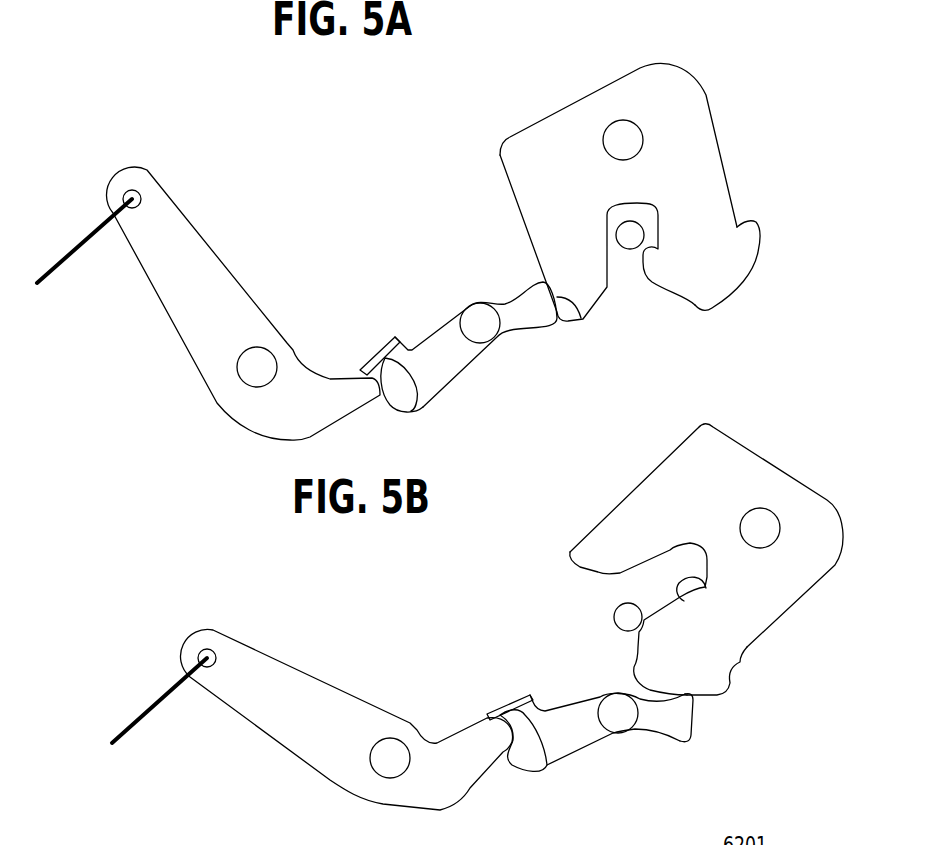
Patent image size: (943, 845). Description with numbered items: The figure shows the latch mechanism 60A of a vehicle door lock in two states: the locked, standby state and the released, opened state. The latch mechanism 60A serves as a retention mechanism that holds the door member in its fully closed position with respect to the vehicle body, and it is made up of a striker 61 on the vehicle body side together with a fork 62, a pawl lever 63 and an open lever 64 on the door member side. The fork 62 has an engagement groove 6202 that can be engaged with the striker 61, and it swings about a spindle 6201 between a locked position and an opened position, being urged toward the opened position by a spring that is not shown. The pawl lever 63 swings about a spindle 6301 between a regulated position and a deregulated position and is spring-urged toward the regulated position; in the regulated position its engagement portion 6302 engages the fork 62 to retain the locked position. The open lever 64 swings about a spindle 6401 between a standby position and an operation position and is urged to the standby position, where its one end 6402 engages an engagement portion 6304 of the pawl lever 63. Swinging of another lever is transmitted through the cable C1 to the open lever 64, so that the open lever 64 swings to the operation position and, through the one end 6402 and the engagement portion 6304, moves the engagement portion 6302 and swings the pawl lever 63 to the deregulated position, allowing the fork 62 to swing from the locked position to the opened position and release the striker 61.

In FIG. 5A, the latch mechanism 60A is at (288, 146).
In FIG. 5B, the latch mechanism 60A is at (360, 611).
In FIG. 5A, the cable C1 is at (70, 252).
In FIG. 5B, the cable C1 is at (145, 717).
In FIG. 5A, the striker 61 is at (613, 233).
In FIG. 5B, the striker 61 is at (614, 617).
In FIG. 5A, the fork 62 is at (593, 93).
In FIG. 5B, the fork 62 is at (823, 500).
In FIG. 5A, the spindle 6201 is at (600, 143).
In FIG. 5B, the spindle 6201 is at (743, 507).
In FIG. 5A, the engagement groove 6202 is at (690, 308).
In FIG. 5B, the engagement groove 6202 is at (730, 650).
In FIG. 5A, the pawl lever 63 is at (437, 330).
In FIG. 5B, the pawl lever 63 is at (567, 702).
In FIG. 5A, the spindle 6301 is at (510, 330).
In FIG. 5B, the spindle 6301 is at (623, 723).
In FIG. 5A, the engagement portion 6302 is at (583, 318).
In FIG. 5B, the engagement portion 6302 is at (693, 720).
In FIG. 5A, the engagement portion 6304 is at (423, 403).
In FIG. 5B, the engagement portion 6304 is at (533, 715).
In FIG. 5A, the open lever 64 is at (158, 302).
In FIG. 5B, the open lever 64 is at (273, 735).
In FIG. 5A, the spindle 6401 is at (243, 383).
In FIG. 5B, the spindle 6401 is at (373, 773).
In FIG. 5A, the one end 6402 is at (377, 372).
In FIG. 5B, the one end 6402 is at (503, 712).